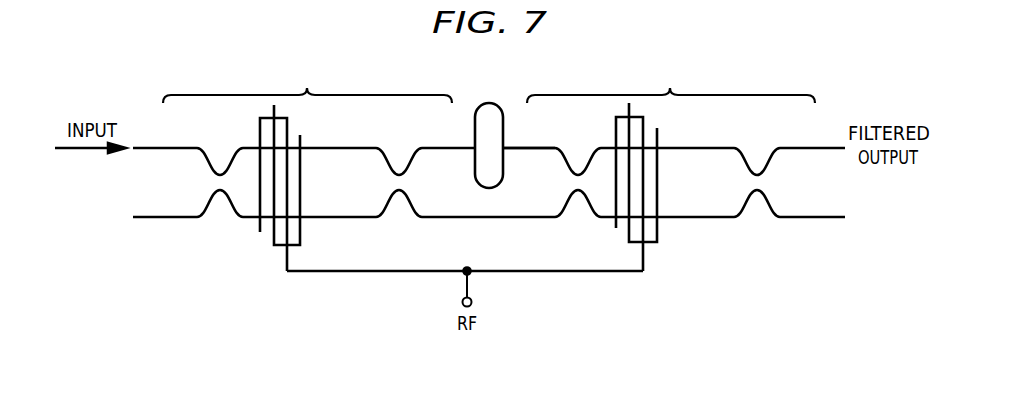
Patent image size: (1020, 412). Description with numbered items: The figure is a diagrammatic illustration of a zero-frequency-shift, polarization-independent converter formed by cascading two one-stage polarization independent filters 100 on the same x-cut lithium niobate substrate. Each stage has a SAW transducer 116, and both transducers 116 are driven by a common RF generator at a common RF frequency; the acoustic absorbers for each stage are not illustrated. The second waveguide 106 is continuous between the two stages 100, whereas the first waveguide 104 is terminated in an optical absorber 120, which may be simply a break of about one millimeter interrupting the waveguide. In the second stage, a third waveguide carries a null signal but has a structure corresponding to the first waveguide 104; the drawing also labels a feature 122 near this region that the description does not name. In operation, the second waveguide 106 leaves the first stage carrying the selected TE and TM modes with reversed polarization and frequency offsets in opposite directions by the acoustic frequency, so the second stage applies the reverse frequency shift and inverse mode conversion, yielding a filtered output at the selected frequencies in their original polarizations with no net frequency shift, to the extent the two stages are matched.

The one-stage polarization independent filter 100 is at (489, 83).
The first waveguide 104 is at (173, 148).
The second waveguide 106 is at (173, 217).
The SAW transducer 116 is at (289, 126).
The optical absorber 120 is at (520, 148).
The optical absorber 122 is at (498, 103).